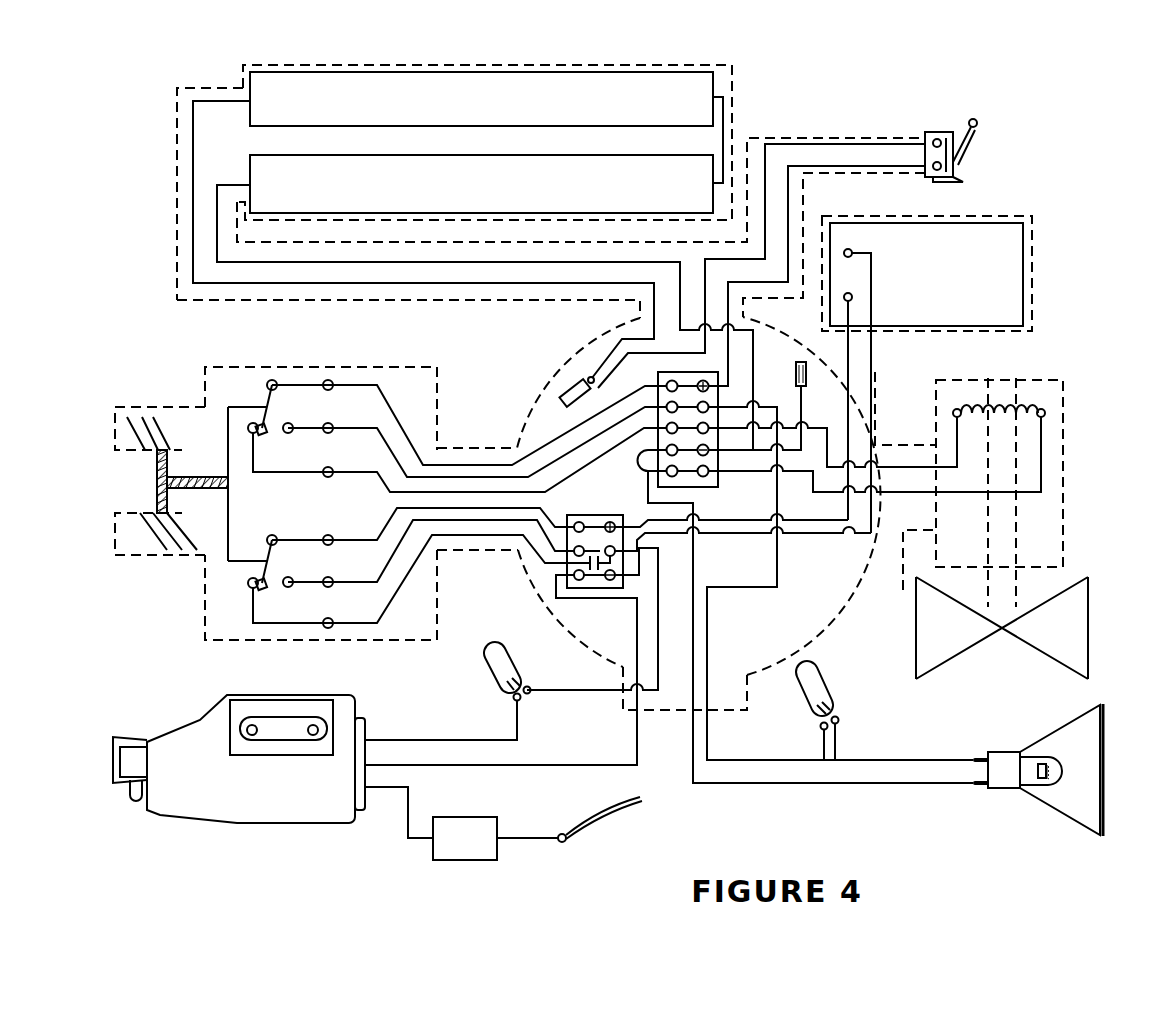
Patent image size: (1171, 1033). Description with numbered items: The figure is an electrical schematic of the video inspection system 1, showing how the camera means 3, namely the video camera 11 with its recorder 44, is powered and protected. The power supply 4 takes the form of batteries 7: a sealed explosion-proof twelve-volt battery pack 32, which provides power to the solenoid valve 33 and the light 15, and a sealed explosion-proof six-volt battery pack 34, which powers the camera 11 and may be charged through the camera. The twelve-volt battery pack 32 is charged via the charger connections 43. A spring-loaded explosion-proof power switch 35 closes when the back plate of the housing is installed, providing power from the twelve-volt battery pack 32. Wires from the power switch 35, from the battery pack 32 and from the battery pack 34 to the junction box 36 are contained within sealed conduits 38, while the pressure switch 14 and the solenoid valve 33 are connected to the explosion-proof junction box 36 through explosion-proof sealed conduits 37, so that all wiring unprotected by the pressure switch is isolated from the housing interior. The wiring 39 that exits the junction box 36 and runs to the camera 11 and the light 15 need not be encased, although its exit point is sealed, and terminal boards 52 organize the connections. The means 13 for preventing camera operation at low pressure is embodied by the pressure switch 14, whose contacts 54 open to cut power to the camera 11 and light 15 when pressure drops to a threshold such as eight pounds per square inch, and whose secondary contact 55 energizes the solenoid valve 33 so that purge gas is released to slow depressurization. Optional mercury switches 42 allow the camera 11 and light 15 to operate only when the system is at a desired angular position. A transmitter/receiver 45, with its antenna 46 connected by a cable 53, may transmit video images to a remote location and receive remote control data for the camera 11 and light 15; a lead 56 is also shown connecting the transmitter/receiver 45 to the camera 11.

The video inspection system 1 is at (1074, 151).
The camera means 3 is at (312, 833).
The power supply 4 is at (742, 88).
The batteries 7 is at (231, 150).
The video camera 11 is at (258, 818).
The means for preventing operation of camera 13 is at (189, 383).
The pressure switch 14 is at (298, 367).
The light 15 is at (1064, 726).
The twelve-volt battery pack 32 is at (547, 122).
The solenoid valve 33 is at (1063, 421).
The six-volt battery pack 34 is at (1015, 252).
The power switch 35 is at (942, 132).
The junction box 36 is at (568, 362).
The sealed conduits 37 is at (485, 448).
The sealed conduits 38 is at (177, 272).
The wiring 39 is at (688, 735).
The mercury switches 42 is at (490, 670).
The charger connections 43 is at (583, 399).
The recorder 44 is at (212, 711).
The transmitter/receiver 45 is at (462, 861).
The antenna 46 is at (593, 812).
The terminal boards 52 is at (658, 378).
The cable 53 is at (542, 841).
The contacts 54 is at (290, 426).
The secondary contact 55 is at (248, 427).
The lead wire 56 is at (410, 806).